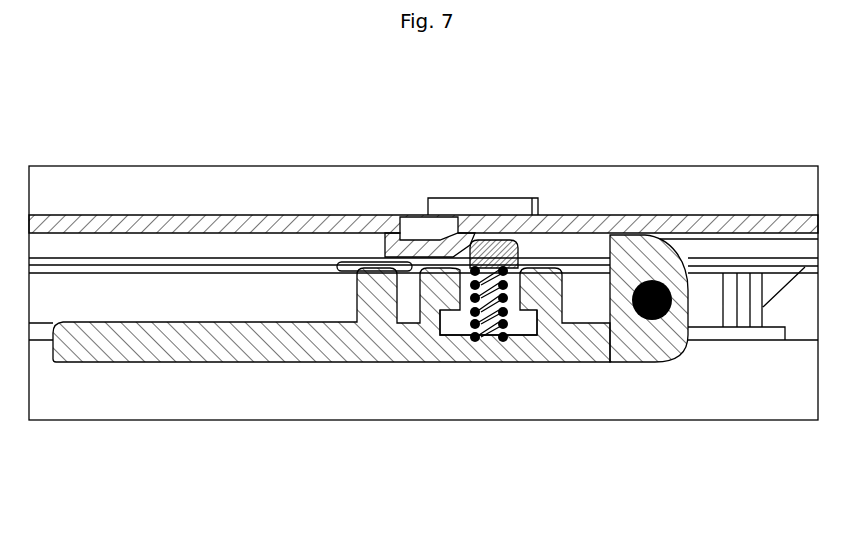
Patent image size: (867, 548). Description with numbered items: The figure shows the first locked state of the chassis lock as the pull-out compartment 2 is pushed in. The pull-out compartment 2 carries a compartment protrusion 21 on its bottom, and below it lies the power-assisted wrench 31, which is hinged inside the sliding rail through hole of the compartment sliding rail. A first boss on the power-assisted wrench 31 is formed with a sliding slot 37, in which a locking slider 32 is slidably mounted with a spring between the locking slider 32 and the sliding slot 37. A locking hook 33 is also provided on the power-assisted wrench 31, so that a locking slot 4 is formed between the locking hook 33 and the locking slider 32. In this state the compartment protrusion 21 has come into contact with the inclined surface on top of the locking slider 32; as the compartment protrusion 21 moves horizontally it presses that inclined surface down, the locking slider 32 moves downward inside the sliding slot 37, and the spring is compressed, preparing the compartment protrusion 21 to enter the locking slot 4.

The pull-out compartment 2 is at (192, 222).
The compartment protrusion 21 is at (432, 242).
The power-assisted wrench 31 is at (267, 347).
The locking slider 32 is at (472, 252).
The locking hook 33 is at (642, 247).
The sliding slot 37 is at (532, 306).
The locking slot 4 is at (563, 250).